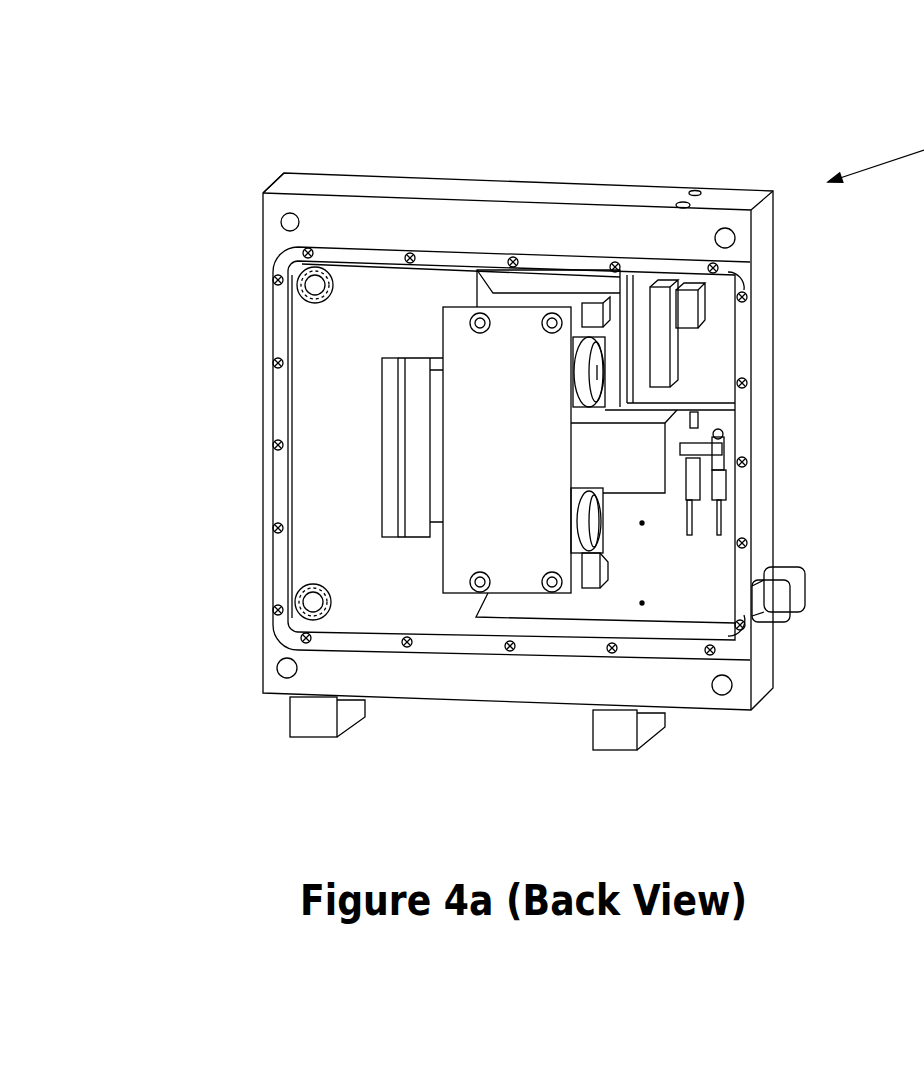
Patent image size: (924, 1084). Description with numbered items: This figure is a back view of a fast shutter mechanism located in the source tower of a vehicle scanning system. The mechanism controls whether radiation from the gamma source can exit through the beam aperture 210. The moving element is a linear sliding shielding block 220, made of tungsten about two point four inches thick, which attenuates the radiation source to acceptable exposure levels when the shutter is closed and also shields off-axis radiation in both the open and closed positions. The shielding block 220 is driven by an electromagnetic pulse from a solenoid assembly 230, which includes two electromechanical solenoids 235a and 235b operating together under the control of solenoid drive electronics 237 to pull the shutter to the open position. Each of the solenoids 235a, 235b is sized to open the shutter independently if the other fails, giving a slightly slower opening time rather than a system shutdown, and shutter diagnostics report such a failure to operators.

The beam aperture 210 is at (387, 448).
The linear sliding shielding block 220 is at (417, 377).
The solenoid assembly 230 is at (470, 555).
The electromechanical solenoid 235a is at (586, 338).
The electromechanical solenoid 235b is at (587, 538).
The solenoid drive electronics 237 is at (673, 368).